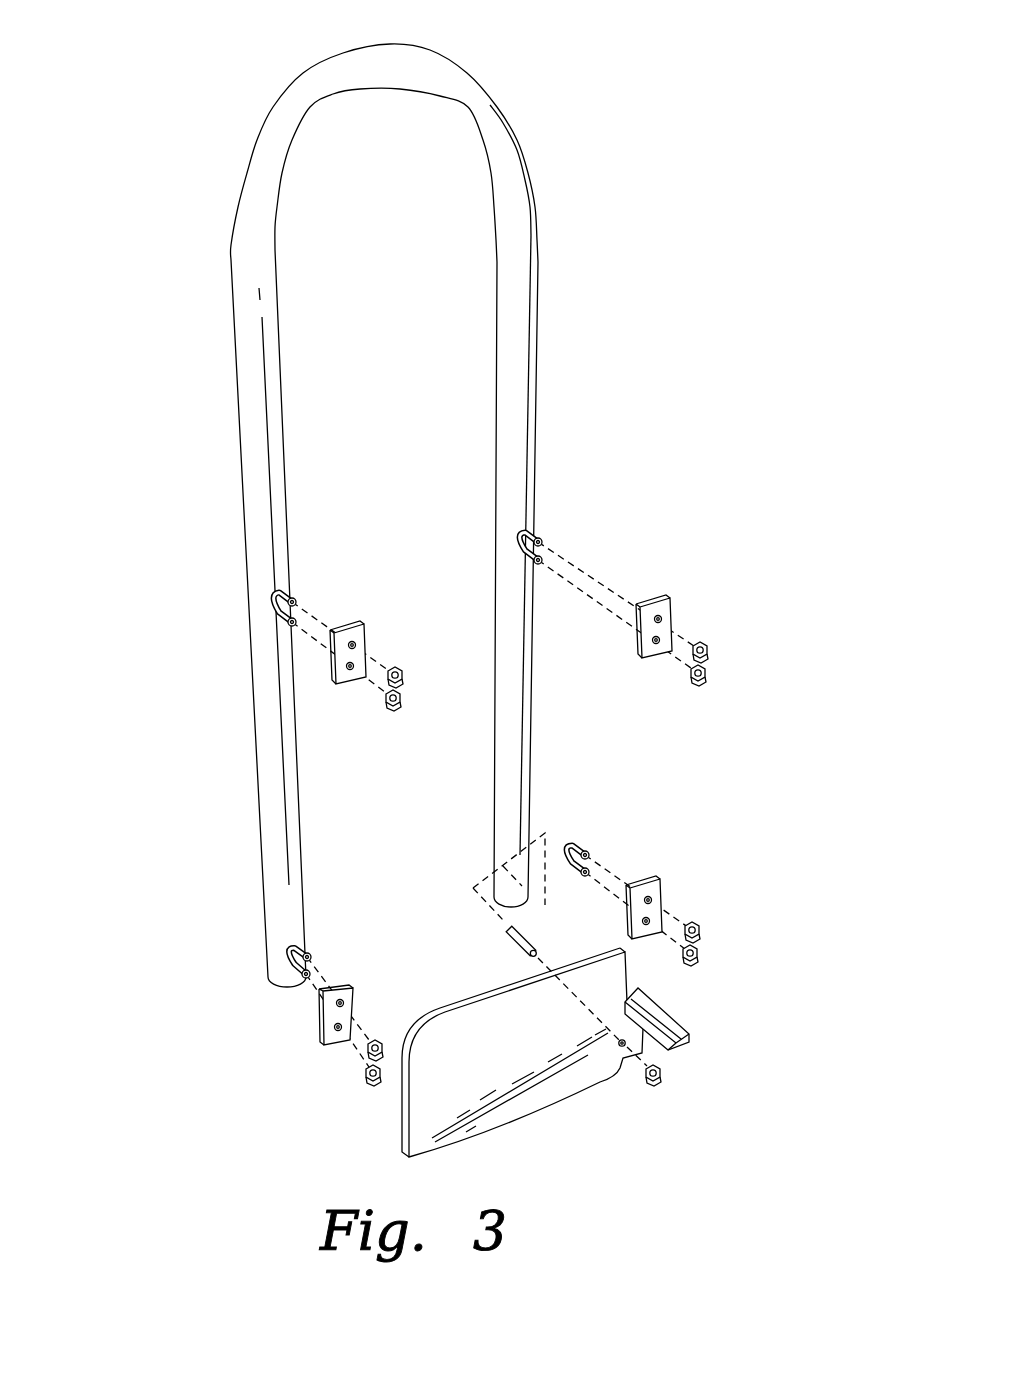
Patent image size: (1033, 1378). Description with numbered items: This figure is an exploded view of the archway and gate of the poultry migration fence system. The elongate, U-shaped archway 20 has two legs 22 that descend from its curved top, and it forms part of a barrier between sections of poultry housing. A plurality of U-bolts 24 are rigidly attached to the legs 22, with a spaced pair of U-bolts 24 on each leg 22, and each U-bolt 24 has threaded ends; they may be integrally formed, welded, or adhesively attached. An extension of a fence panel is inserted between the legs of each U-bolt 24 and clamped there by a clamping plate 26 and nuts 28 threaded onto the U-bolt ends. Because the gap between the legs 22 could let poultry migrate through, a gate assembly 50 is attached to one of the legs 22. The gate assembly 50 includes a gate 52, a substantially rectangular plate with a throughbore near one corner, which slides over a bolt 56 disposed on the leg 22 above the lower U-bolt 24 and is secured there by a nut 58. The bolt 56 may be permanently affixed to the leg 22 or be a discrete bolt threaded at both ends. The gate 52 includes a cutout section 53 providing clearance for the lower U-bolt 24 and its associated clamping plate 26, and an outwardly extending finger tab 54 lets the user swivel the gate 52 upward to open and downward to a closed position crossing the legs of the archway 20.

The archway 20 is at (492, 79).
The legs 22 is at (272, 796).
The U-bolts 24 is at (272, 608).
The clamping plate 26 is at (367, 623).
The nuts 28 is at (400, 698).
The gate assembly 50 is at (608, 1078).
The gate 52 is at (555, 1088).
The cutout section 53 is at (624, 1060).
The finger tab 54 is at (688, 1010).
The bolt 56 is at (507, 938).
The nut 58 is at (663, 1076).